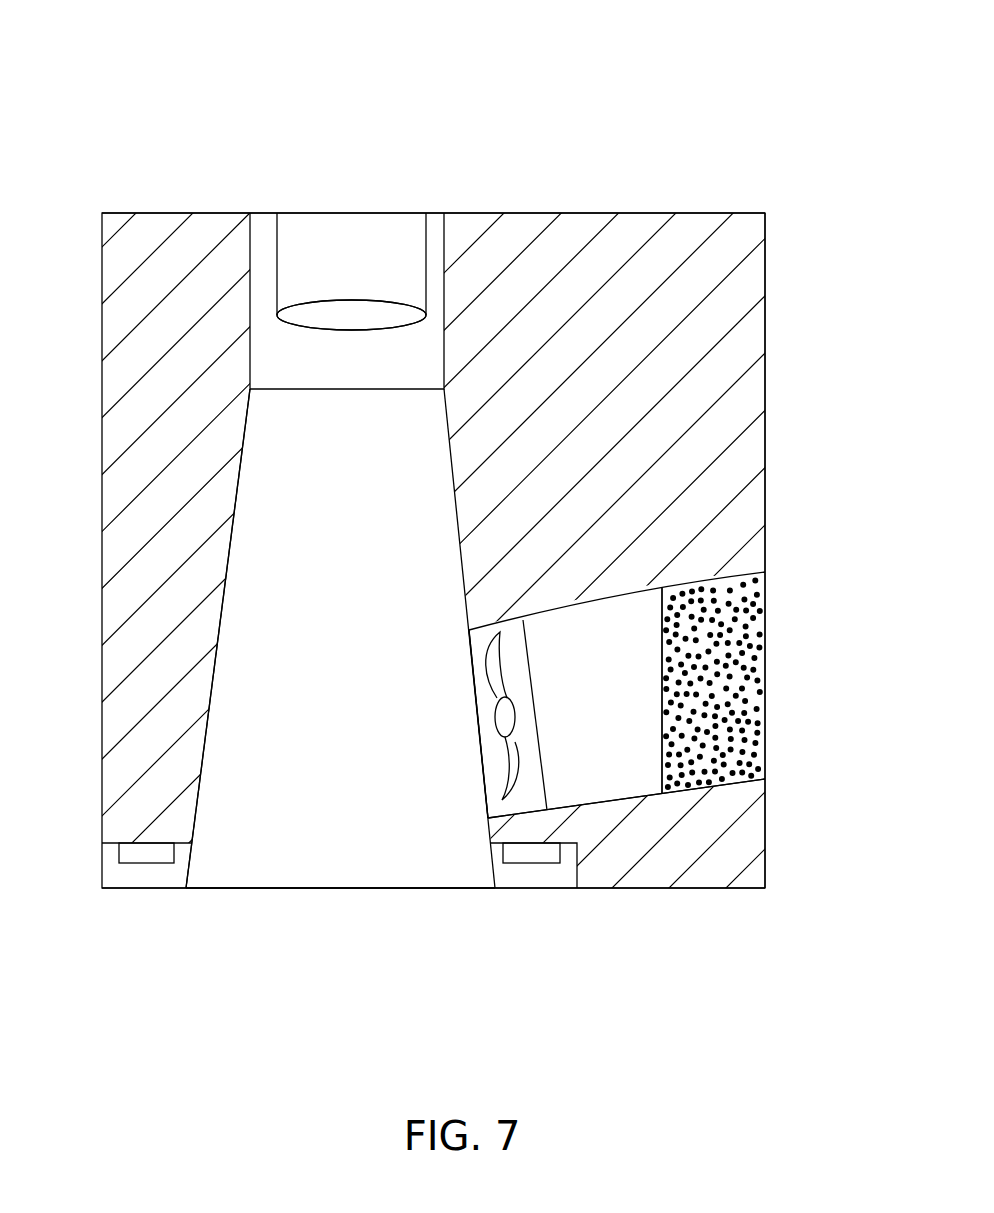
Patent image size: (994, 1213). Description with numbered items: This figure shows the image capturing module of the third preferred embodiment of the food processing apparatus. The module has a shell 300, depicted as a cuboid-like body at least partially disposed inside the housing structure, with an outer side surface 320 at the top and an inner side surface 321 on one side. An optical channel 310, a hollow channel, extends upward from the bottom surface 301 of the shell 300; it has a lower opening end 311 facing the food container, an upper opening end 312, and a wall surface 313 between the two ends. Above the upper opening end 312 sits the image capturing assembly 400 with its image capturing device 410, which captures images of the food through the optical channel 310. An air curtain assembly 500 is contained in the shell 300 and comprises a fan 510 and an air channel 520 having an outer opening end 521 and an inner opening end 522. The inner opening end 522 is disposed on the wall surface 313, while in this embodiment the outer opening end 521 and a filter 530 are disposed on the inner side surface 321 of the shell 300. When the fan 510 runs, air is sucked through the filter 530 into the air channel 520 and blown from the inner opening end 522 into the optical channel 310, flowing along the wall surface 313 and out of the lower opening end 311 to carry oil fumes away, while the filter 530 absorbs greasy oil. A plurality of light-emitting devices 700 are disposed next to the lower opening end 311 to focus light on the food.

The shell 300 is at (764, 360).
The bottom surface 301 is at (708, 888).
The optical channel 310 is at (263, 626).
The lower opening end 311 is at (308, 888).
The upper opening end 312 is at (267, 387).
The wall surface 313 is at (197, 800).
The outer side surface 320 is at (745, 213).
The inner side surface 321 is at (764, 473).
The image capturing assembly 400 is at (375, 240).
The image capturing device 410 is at (323, 317).
The air curtain assembly 500 is at (625, 626).
The fan 510 is at (510, 714).
The air channel 520 is at (625, 688).
The outer opening end 521 is at (765, 770).
The inner opening end 522 is at (478, 737).
The filter 530 is at (740, 742).
The light-emitting device 700 is at (122, 865).